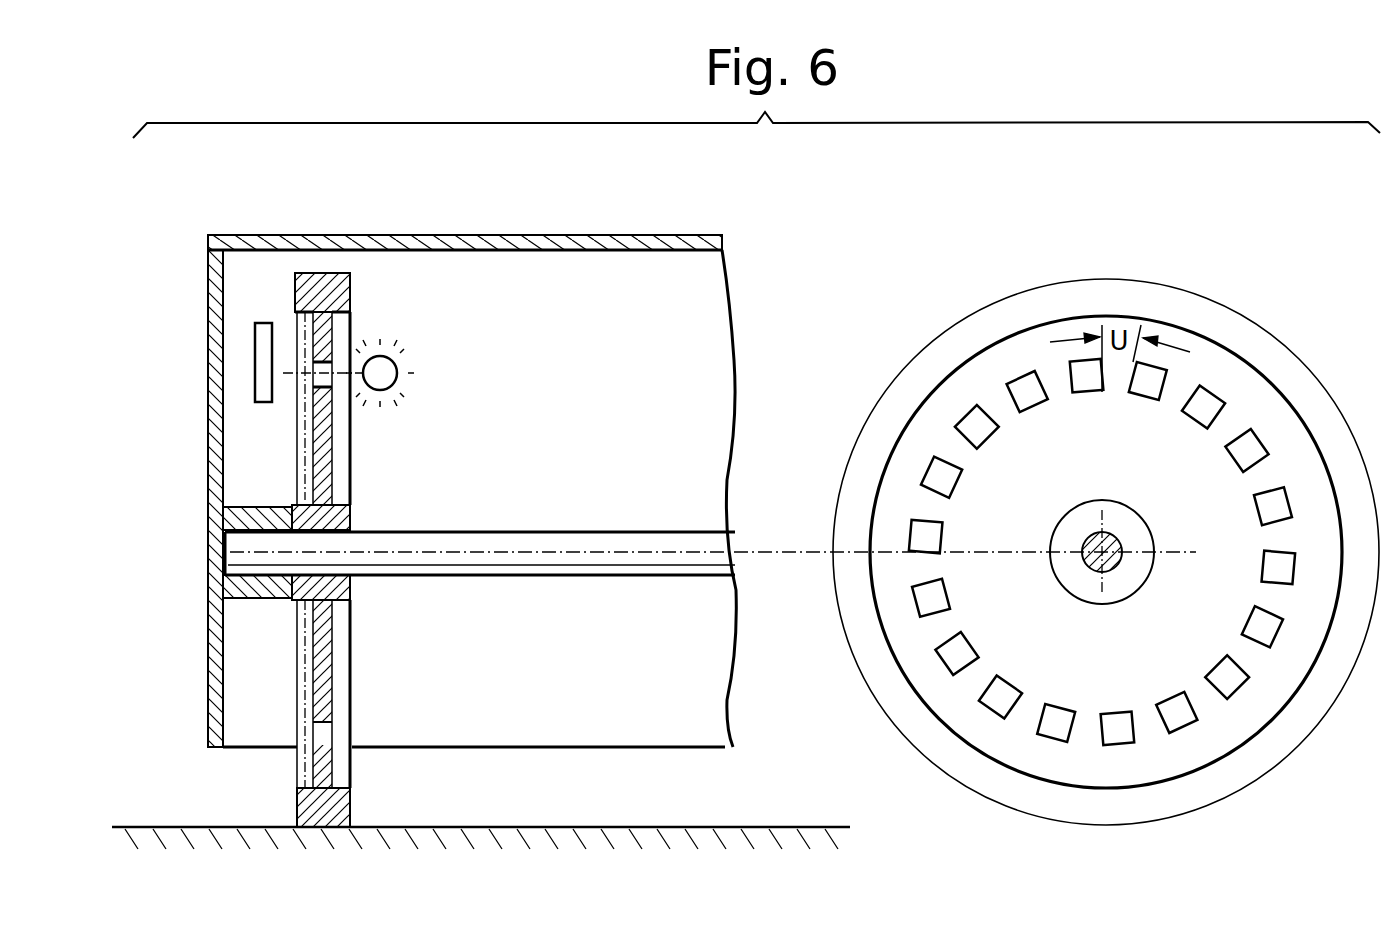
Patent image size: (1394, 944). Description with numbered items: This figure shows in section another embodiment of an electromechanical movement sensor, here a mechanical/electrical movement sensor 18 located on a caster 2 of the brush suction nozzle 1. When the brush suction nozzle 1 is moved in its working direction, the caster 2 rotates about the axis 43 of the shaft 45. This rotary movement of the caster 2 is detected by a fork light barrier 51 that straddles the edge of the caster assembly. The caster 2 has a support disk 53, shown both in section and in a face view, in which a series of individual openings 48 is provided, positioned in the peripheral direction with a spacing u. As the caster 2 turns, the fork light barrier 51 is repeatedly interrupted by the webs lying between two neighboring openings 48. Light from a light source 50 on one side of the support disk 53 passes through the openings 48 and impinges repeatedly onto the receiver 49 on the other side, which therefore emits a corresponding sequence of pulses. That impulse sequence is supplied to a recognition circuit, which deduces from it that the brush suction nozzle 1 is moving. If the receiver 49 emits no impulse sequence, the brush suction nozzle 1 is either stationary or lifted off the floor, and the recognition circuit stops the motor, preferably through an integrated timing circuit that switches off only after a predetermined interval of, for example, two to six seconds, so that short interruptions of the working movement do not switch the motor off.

The brush suction nozzle 1 is at (589, 232).
The caster 2 is at (295, 657).
The mechanical/electrical movement sensor 18 is at (295, 411).
The axis 43 is at (648, 552).
The shaft 45 is at (687, 565).
The openings 48 is at (1090, 382).
The receiver 49 is at (262, 346).
The light source 50 is at (371, 357).
The fork light barrier 51 is at (281, 298).
The support disk 53 is at (320, 706).